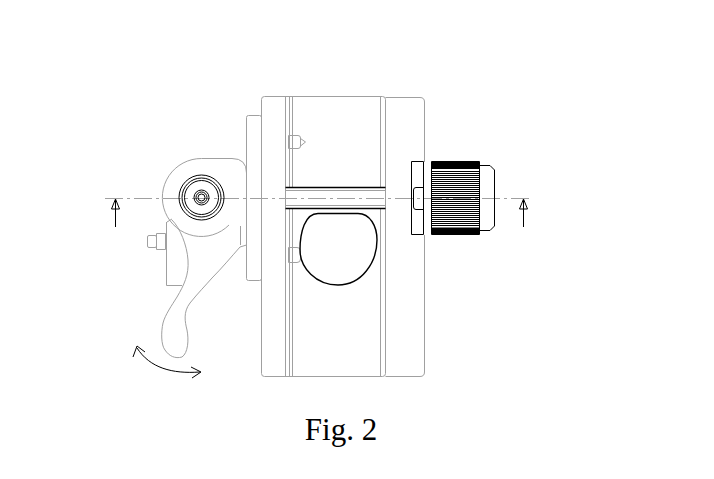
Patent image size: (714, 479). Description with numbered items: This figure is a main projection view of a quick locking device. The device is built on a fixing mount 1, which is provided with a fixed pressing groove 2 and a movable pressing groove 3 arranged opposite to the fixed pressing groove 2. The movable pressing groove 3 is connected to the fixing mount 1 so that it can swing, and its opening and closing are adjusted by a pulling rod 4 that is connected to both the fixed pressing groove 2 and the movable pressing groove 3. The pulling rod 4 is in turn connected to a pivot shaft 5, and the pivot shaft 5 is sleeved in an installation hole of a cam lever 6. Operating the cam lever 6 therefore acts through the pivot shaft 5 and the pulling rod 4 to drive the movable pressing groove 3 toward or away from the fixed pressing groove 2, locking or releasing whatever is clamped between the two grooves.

The fixing mount 1 is at (354, 108).
The fixed pressing groove 2 is at (272, 130).
The movable pressing groove 3 is at (405, 283).
The pulling rod 4 is at (345, 190).
The pivot shaft 5 is at (203, 184).
The cam lever 6 is at (180, 308).